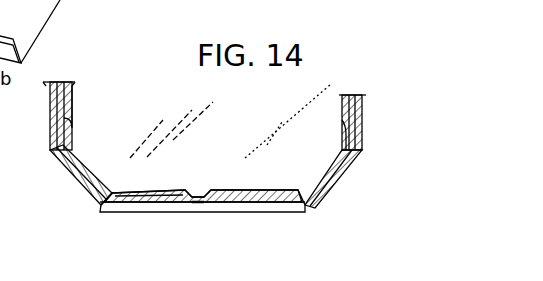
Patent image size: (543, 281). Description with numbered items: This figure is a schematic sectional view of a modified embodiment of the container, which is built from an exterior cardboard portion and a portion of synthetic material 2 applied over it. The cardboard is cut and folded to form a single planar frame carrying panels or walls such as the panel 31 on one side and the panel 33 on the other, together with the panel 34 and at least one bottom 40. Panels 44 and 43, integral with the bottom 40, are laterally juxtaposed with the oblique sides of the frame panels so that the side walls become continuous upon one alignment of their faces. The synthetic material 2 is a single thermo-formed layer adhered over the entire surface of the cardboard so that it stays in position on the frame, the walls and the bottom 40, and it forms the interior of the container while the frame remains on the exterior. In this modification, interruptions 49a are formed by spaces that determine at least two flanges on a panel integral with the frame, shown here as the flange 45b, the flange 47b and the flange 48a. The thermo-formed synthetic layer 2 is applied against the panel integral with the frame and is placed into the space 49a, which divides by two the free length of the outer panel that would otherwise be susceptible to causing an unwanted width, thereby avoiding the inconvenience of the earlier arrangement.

The portion of synthetic material 2 is at (69, 128).
The panel 31 is at (50, 93).
The panel 33 is at (362, 116).
The panel 34 is at (128, 211).
The bottom 40 is at (311, 168).
The panel 43 is at (338, 171).
The panel 44 is at (90, 188).
The flange 45b is at (72, 100).
The flange 47b is at (368, 82).
The flange 48a is at (165, 206).
The interruption 49a is at (205, 209).